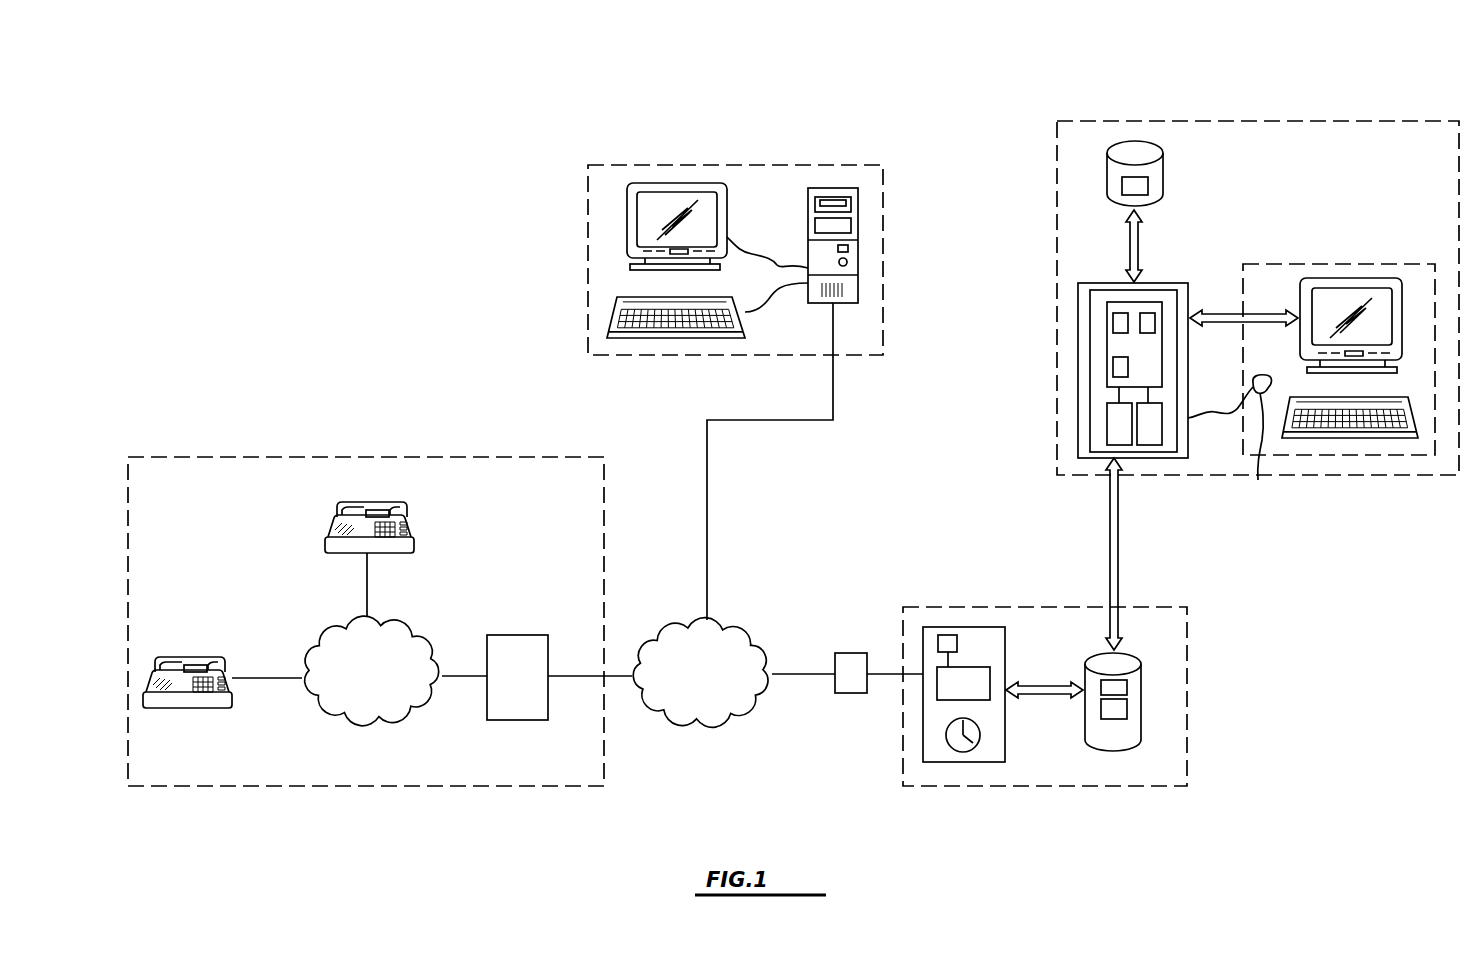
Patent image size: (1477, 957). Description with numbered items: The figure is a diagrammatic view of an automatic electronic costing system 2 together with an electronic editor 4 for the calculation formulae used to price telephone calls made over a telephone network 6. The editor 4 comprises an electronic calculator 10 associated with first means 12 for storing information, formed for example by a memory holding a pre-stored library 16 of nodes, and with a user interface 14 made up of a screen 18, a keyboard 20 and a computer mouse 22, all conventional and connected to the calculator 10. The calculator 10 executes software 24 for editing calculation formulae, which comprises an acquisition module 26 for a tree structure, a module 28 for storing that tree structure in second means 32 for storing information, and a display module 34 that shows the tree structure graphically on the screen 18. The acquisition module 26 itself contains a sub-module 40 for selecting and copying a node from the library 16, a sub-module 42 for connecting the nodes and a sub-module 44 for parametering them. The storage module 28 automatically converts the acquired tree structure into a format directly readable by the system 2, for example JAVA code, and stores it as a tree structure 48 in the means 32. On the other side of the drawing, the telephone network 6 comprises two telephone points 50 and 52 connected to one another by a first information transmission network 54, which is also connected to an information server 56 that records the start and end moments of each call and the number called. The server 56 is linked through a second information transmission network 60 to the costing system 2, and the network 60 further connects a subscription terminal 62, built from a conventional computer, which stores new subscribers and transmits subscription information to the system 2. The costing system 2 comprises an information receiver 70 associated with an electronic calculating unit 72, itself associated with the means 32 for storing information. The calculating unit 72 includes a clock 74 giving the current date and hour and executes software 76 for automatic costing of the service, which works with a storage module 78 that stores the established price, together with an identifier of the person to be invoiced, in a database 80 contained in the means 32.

The automatic electronic costing system 2 is at (1064, 801).
The electronic editor 4 is at (1280, 109).
The telephone network 6 is at (379, 443).
The electronic calculator 10 is at (1065, 313).
The first means for storing information 12 is at (1090, 169).
The user interface 14 is at (1306, 252).
The pre-stored library of nodes 16 is at (1135, 186).
The screen 18 is at (1355, 292).
The keyboard 20 is at (1352, 440).
The computer mouse 22 is at (1260, 443).
The software for editing calculation formulae 24 is at (1075, 335).
The acquisition module 26 is at (1089, 303).
The storage module 28 is at (1116, 417).
The second means for storing information 32 is at (1151, 756).
The display module 34 is at (1148, 435).
The sub-module for selecting and copying a node 40 is at (1120, 313).
The sub-module for connecting the nodes 42 is at (1148, 313).
The sub-module for parametering the nodes 44 is at (1118, 364).
The stored tree structure 48 is at (1124, 687).
The telephone point 50 is at (180, 677).
The telephone point 52 is at (333, 525).
The first information transmission network 54 is at (372, 671).
The information server 56 is at (516, 650).
The second information transmission network 60 is at (700, 673).
The subscription terminal 62 is at (575, 215).
The information receiver 70 is at (850, 655).
The electronic calculating unit 72 is at (970, 765).
The clock 74 is at (948, 742).
The software for automatic costing 76 is at (970, 678).
The storage module 78 is at (945, 635).
The database 80 is at (1125, 712).